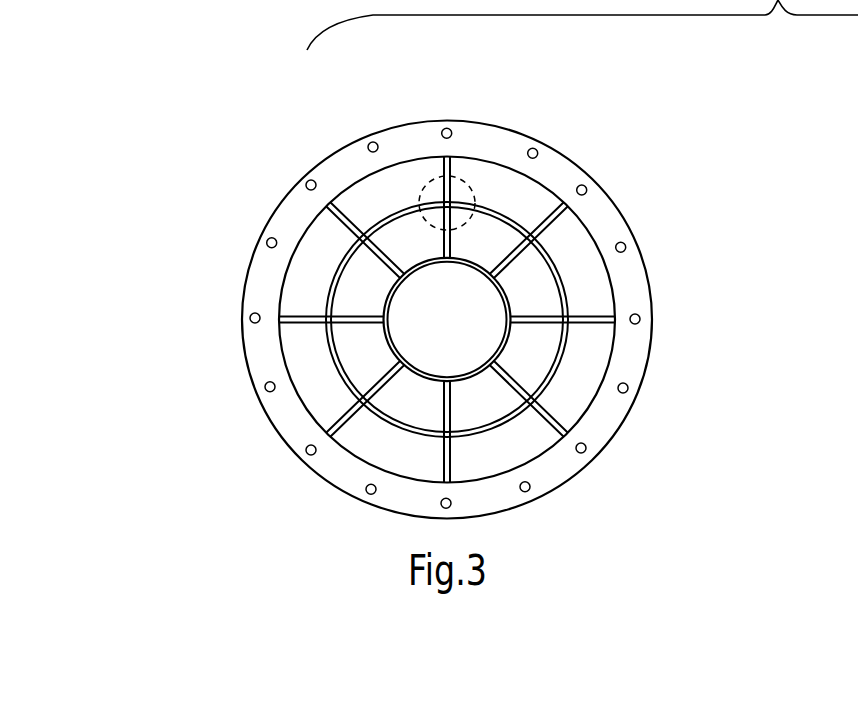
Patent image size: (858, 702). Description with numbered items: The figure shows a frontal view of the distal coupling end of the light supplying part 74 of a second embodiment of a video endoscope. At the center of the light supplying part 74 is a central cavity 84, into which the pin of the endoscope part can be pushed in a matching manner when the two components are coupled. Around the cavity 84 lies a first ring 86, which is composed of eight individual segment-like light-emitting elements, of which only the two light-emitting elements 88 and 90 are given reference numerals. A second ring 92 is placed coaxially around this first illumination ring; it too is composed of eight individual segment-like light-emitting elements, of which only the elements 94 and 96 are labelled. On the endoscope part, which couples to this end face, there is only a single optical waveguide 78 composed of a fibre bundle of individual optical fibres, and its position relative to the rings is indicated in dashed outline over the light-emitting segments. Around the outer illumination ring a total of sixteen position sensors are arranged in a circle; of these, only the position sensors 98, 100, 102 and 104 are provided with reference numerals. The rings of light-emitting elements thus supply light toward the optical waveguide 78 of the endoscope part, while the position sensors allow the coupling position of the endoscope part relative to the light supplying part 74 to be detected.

The light supplying part 74 is at (640, 163).
The optical waveguide 78 is at (459, 177).
The central cavity 84 is at (413, 332).
The first ring 86 is at (497, 415).
The light-emitting element 88 is at (375, 262).
The light-emitting element 90 is at (503, 250).
The second ring 92 is at (409, 473).
The light-emitting element 94 is at (372, 192).
The light-emitting element 96 is at (520, 183).
The position sensor 98 is at (306, 183).
The position sensor 100 is at (373, 142).
The position sensor 102 is at (449, 128).
The position sensor 104 is at (535, 149).